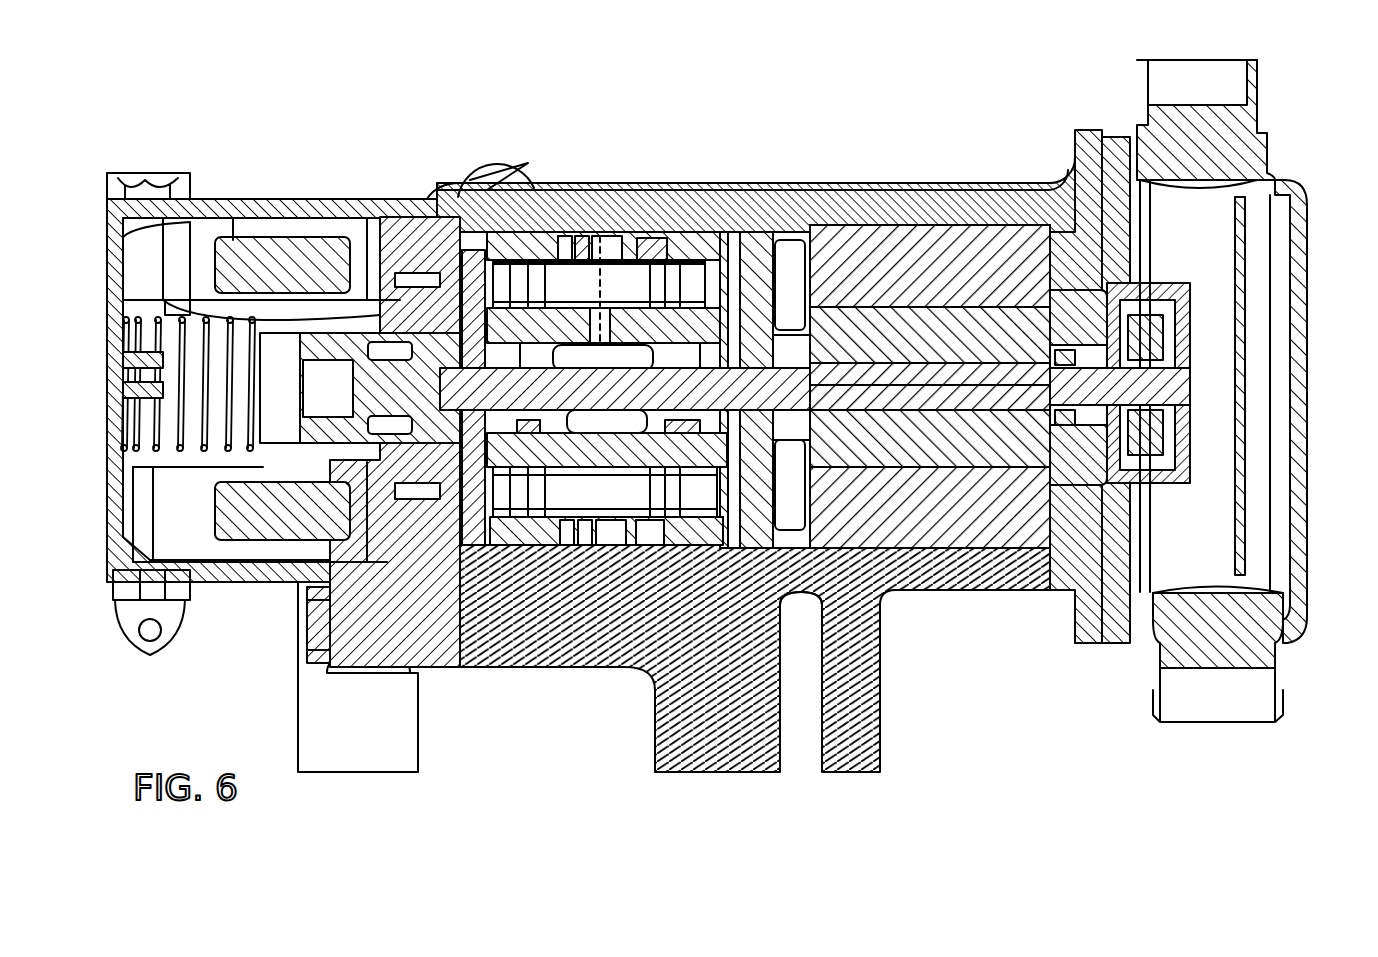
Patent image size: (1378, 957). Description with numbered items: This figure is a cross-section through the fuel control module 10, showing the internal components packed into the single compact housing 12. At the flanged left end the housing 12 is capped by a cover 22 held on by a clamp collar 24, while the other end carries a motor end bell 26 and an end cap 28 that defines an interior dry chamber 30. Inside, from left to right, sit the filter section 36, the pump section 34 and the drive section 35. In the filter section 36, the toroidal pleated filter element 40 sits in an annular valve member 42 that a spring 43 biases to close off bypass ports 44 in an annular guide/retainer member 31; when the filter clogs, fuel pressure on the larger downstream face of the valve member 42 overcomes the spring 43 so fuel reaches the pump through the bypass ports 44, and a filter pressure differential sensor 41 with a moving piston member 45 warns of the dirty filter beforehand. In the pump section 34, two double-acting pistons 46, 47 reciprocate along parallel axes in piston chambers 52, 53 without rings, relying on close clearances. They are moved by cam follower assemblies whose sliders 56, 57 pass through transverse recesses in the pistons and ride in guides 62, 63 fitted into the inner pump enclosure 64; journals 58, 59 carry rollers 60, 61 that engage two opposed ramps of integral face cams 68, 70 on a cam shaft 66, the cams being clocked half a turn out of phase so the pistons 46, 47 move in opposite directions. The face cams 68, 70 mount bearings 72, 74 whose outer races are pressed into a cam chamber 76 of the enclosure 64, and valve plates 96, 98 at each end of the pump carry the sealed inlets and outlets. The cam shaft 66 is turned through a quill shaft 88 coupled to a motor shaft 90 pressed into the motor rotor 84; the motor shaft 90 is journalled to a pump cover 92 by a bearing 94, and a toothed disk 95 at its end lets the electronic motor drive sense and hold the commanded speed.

The fuel control module 10 is at (655, 92).
The housing 12 is at (1093, 648).
The cover 22 is at (105, 570).
The clamp collar 24 is at (125, 625).
The motor end bell 26 is at (1098, 293).
The end cap 28 is at (1300, 185).
The interior dry chamber 30 is at (1212, 246).
The annular guide/retainer member 31 is at (386, 265).
The pump section 34 is at (462, 545).
The drive section 35 is at (905, 555).
The filter section 36 is at (282, 225).
The filter element 40 is at (220, 245).
The filter pressure differential sensor 41 is at (330, 430).
The annular valve member 42 is at (215, 280).
The spring 43 is at (220, 430).
The bypass ports 44 is at (380, 305).
The piston member 45 is at (420, 445).
The piston 46 is at (523, 290).
The piston 47 is at (663, 531).
The piston chamber 52 is at (735, 265).
The piston chamber 53 is at (490, 545).
The slider 56 is at (585, 300).
The slider 57 is at (588, 545).
The journal 58 is at (600, 330).
The journal 59 is at (597, 545).
The roller 60 is at (622, 255).
The roller 61 is at (613, 545).
The guide 62 is at (570, 250).
The guide 63 is at (560, 545).
The inner pump enclosure 64 is at (518, 545).
The cam shaft 66 is at (596, 400).
The face cam 68 is at (603, 357).
The face cam 70 is at (650, 355).
The bearing 72 is at (532, 433).
The bearing 74 is at (682, 433).
The cam chamber 76 is at (690, 255).
The rotor 84 is at (970, 460).
The quill shaft 88 is at (806, 385).
The motor shaft 90 is at (903, 380).
The pump cover 92 is at (950, 245).
The bearing 94 is at (890, 380).
The toothed disk 95 is at (1150, 475).
The valve plate 96 is at (466, 228).
The valve plate 98 is at (785, 605).